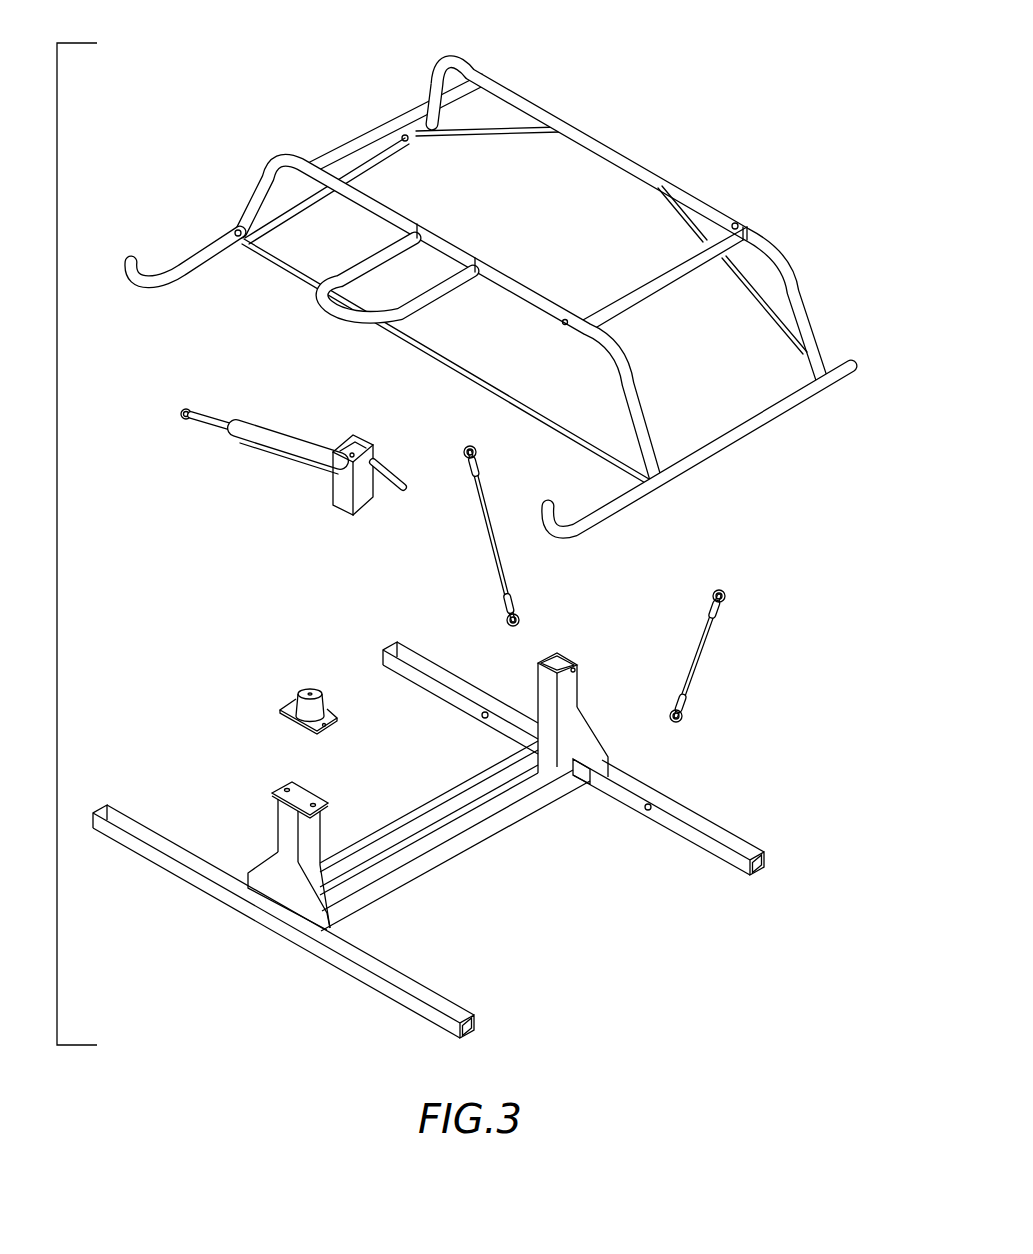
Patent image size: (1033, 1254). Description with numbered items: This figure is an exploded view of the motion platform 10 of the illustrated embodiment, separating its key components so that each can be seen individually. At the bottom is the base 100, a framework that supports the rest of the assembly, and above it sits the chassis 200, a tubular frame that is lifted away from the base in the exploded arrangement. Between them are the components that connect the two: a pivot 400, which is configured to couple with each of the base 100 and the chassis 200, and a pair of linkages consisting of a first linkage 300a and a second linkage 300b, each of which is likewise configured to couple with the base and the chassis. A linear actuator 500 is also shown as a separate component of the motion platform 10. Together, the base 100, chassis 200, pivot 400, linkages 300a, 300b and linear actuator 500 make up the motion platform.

The motion platform 10 is at (38, 529).
The base 100 is at (545, 922).
The chassis 200 is at (676, 108).
The first linkage 300a is at (738, 708).
The second linkage 300b is at (466, 573).
The pivot 400 is at (268, 682).
The linear actuator 500 is at (278, 485).